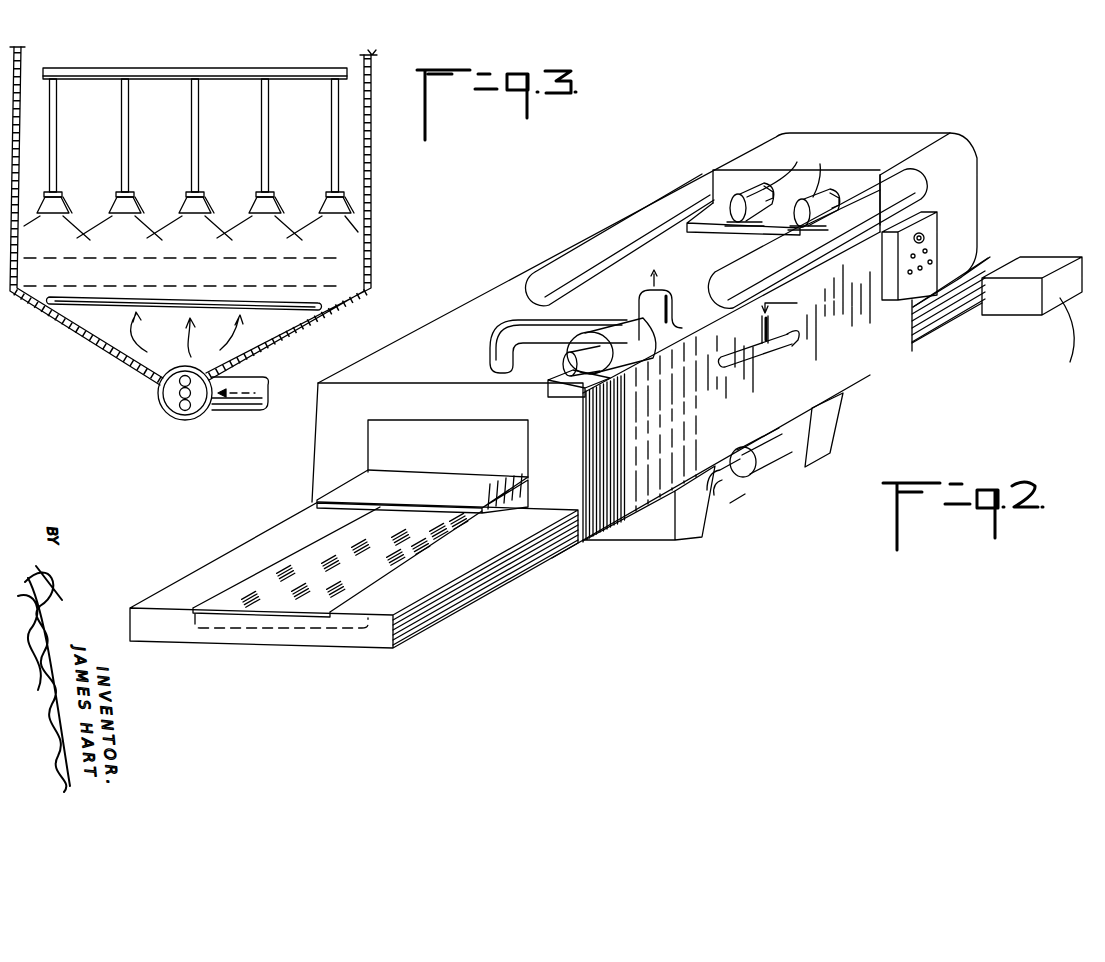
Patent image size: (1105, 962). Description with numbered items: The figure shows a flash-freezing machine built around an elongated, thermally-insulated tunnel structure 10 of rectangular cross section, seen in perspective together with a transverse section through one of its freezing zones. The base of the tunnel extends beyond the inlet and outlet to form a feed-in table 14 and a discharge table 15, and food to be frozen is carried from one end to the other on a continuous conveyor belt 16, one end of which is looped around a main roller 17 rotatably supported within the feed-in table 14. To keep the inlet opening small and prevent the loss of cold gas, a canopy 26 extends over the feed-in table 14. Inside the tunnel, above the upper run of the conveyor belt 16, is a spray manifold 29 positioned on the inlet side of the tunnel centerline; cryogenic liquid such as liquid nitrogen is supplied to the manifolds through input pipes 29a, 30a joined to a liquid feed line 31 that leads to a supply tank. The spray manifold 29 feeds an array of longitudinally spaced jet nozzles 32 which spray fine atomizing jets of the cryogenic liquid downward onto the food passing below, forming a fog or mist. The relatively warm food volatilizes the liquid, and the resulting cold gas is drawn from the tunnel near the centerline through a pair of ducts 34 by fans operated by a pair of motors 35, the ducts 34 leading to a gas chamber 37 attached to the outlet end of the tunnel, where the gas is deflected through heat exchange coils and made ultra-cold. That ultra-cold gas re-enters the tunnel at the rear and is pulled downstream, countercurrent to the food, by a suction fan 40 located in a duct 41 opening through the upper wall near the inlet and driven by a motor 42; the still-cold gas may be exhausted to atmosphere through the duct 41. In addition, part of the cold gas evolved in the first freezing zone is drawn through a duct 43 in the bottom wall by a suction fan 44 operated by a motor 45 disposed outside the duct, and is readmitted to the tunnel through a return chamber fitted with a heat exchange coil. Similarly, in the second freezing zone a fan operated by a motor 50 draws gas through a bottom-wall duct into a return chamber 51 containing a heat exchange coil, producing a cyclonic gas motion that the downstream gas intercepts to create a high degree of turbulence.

In FIG. 3, the tunnel structure 10 is at (373, 120).
In FIG. 2, the tunnel structure 10 is at (482, 305).
In FIG. 2, the feed-in table 14 is at (448, 608).
In FIG. 2, the discharge table 15 is at (945, 328).
In FIG. 3, the conveyor belt 16 is at (225, 258).
In FIG. 2, the conveyor belt 16 is at (323, 550).
In FIG. 2, the main roller 17 is at (343, 623).
In FIG. 2, the canopy 26 is at (367, 485).
In FIG. 3, the spray manifold 29 is at (283, 77).
In FIG. 2, the input pipe 29a is at (740, 362).
In FIG. 2, the input pipe 30a is at (797, 341).
In FIG. 2, the liquid feed line 31 is at (762, 333).
In FIG. 3, the jet nozzles 32 is at (328, 203).
In FIG. 2, the ducts 34 is at (645, 198).
In FIG. 2, the motors 35 is at (770, 156).
In FIG. 2, the gas chamber 37 is at (967, 200).
In FIG. 2, the suction fan 40 is at (687, 530).
In FIG. 2, the duct 41 is at (543, 321).
In FIG. 2, the motor 42 is at (634, 320).
In FIG. 3, the duct 43 is at (232, 410).
In FIG. 3, the suction fan 44 is at (182, 417).
In FIG. 2, the motor 45 is at (712, 494).
In FIG. 2, the motor 50 is at (763, 468).
In FIG. 2, the return chamber 51 is at (812, 453).